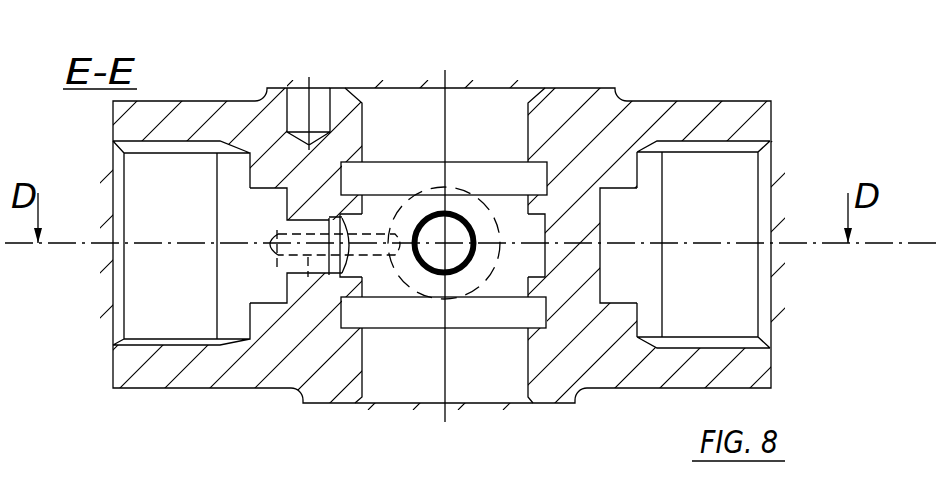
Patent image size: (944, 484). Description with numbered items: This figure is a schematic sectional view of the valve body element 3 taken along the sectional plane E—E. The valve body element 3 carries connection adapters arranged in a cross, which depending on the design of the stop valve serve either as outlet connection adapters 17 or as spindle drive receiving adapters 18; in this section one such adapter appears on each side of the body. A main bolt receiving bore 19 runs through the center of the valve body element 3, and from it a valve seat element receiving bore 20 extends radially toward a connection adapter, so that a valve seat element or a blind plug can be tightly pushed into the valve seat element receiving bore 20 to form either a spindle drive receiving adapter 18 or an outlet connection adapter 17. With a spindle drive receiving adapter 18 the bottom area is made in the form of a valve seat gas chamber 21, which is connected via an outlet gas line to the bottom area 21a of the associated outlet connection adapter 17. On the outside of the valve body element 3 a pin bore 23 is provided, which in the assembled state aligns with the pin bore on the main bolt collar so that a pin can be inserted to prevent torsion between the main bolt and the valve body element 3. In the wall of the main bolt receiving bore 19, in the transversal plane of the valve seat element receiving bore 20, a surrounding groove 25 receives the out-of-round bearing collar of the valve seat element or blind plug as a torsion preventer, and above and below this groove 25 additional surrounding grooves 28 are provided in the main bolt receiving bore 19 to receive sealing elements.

The valve body element 3 is at (818, 66).
The outlet connection adapter 17 is at (718, 270).
The spindle drive receiving adapter 18 is at (163, 294).
The main bolt receiving bore 19 is at (487, 133).
The valve seat element receiving bore 20 is at (308, 278).
The valve seat gas chamber 21 is at (265, 220).
The bottom area of the outlet connection adapter 21a is at (622, 215).
The pin bore 23 is at (298, 100).
The surrounding groove 25 is at (546, 228).
The additional surrounding grooves 28 is at (543, 162).